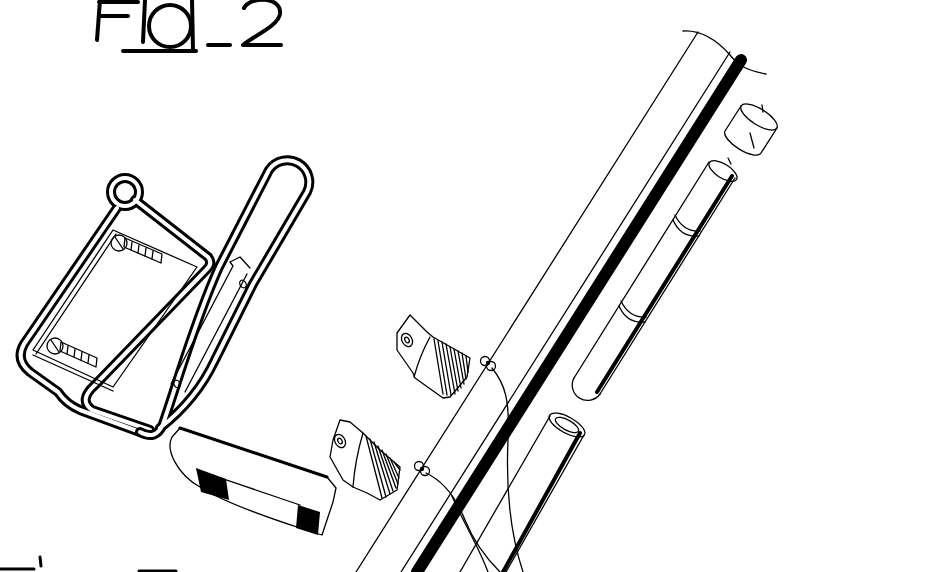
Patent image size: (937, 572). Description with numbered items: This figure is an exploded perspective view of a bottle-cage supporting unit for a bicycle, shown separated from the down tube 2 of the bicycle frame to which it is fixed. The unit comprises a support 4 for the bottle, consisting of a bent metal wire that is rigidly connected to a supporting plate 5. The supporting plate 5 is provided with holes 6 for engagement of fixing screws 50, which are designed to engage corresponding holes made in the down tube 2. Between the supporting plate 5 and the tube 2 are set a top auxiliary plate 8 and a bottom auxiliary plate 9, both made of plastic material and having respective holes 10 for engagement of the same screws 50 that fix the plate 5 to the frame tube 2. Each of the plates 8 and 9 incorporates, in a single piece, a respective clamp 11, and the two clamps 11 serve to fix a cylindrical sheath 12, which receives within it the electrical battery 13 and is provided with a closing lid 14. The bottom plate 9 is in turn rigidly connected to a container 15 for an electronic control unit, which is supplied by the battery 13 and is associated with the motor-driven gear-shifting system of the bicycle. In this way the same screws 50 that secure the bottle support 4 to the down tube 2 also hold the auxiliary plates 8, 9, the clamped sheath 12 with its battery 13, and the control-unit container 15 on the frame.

The down tube 2 is at (628, 184).
The support 4 is at (70, 257).
The supporting plate 5 is at (213, 263).
The holes 6 is at (243, 288).
The top auxiliary plate 8 is at (427, 338).
The bottom auxiliary plate 9 is at (318, 470).
The holes 10 is at (400, 337).
The clamps 11 is at (447, 349).
The cylindrical sheath 12 is at (543, 471).
The battery 13 is at (637, 343).
The closing lid 14 is at (762, 155).
The container 15 is at (262, 497).
The fixing screws 50 is at (137, 260).